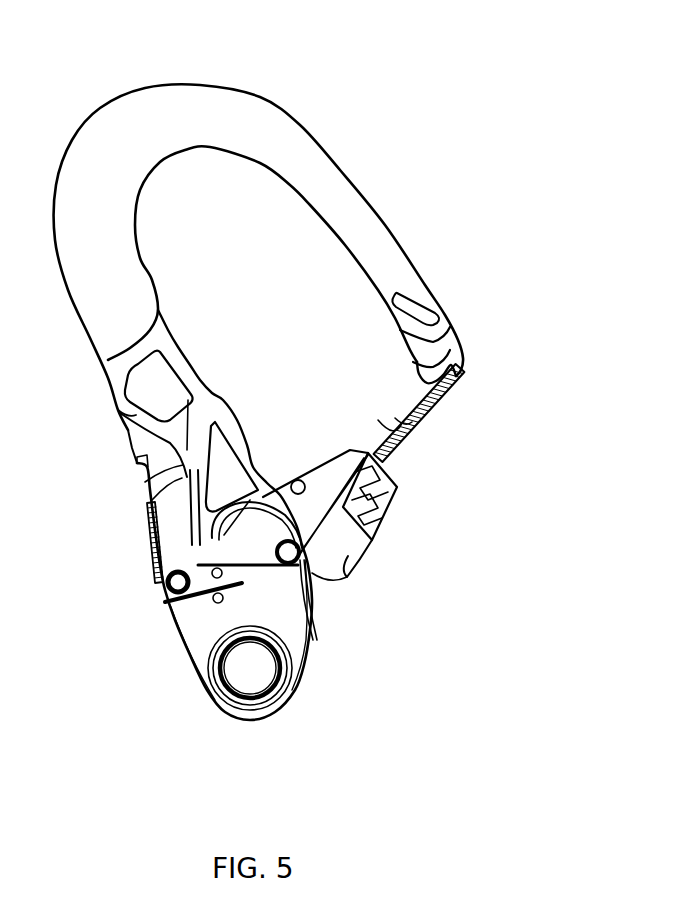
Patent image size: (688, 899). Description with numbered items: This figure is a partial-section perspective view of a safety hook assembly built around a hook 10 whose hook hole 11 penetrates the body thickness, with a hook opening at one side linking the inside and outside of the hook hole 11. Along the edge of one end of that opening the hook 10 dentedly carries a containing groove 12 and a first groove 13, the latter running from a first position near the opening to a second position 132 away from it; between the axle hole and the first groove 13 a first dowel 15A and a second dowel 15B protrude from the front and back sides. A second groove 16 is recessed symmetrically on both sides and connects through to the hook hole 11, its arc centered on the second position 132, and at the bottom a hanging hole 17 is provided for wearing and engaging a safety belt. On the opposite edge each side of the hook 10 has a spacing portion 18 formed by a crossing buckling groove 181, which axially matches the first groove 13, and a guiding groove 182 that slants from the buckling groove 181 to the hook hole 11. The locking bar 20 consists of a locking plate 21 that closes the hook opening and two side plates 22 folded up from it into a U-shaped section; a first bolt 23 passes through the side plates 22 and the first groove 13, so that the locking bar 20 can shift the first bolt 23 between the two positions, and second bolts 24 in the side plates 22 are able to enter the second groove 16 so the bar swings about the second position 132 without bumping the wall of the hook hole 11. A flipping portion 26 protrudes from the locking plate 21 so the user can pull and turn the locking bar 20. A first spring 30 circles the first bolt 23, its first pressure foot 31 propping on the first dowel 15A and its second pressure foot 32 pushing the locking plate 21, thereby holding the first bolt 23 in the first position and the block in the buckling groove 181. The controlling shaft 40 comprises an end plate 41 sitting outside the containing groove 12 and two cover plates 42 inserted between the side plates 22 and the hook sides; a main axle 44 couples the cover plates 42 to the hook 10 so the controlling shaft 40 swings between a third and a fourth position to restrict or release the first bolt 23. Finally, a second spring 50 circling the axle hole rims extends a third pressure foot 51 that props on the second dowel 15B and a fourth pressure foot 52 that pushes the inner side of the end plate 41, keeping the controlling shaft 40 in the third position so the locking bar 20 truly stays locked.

The hook 10 is at (288, 392).
The hook hole 11 is at (270, 225).
The containing groove 12 is at (147, 486).
The first groove 13 is at (300, 603).
The second position 132 is at (290, 663).
The first dowel 15A is at (205, 597).
The second dowel 15B is at (212, 598).
The second groove 16 is at (235, 513).
The hanging hole 17 is at (217, 693).
The spacing portion 18 is at (461, 301).
The buckling groove 181 is at (452, 333).
The guiding groove 182 is at (414, 336).
The locking bar 20 is at (386, 502).
The locking plate 21 is at (440, 403).
The side plate 22 is at (378, 420).
The first bolt 23 is at (320, 583).
The second bolt 24 is at (298, 480).
The flipping portion 26 is at (382, 502).
The first spring 30 is at (273, 540).
The first pressure foot 31 is at (197, 477).
The second pressure foot 32 is at (402, 423).
The controlling shaft 40 is at (175, 574).
The end plate 41 is at (150, 523).
The cover plate 42 is at (130, 422).
The main axle 44 is at (155, 597).
The second spring 50 is at (170, 595).
The third pressure foot 51 is at (232, 675).
The fourth pressure foot 52 is at (190, 470).